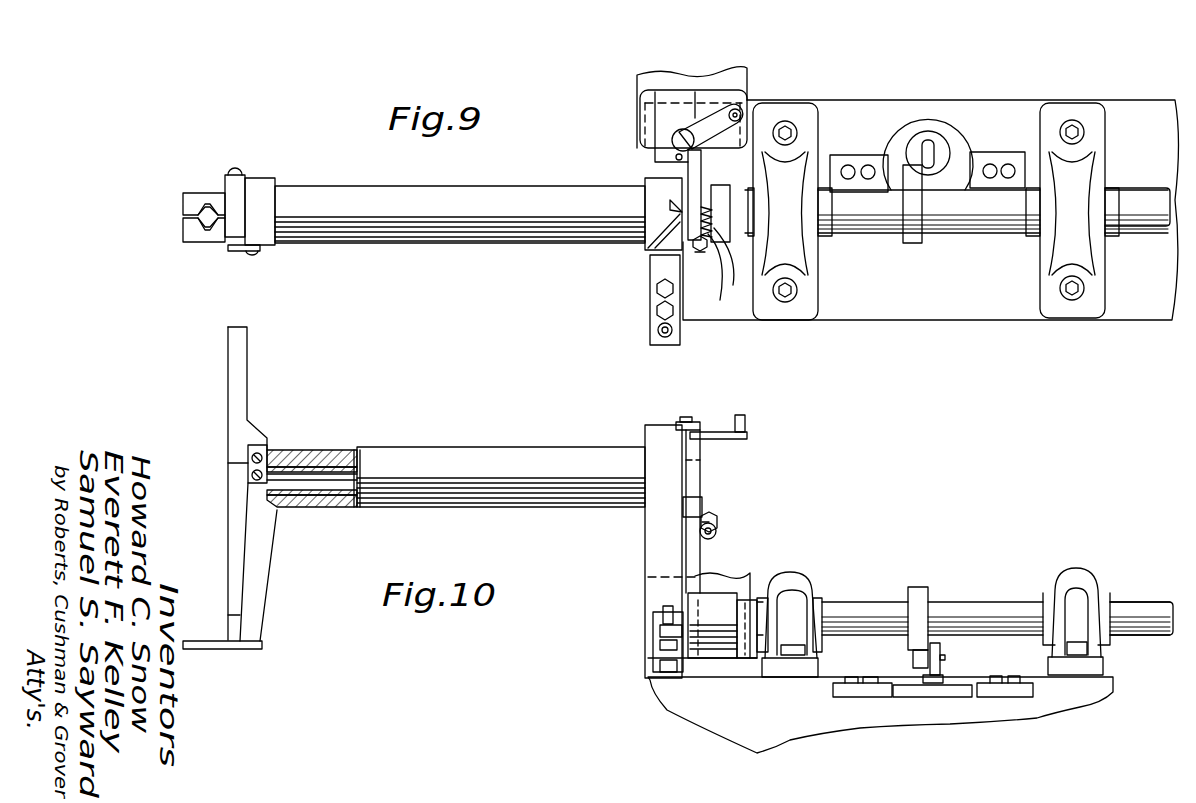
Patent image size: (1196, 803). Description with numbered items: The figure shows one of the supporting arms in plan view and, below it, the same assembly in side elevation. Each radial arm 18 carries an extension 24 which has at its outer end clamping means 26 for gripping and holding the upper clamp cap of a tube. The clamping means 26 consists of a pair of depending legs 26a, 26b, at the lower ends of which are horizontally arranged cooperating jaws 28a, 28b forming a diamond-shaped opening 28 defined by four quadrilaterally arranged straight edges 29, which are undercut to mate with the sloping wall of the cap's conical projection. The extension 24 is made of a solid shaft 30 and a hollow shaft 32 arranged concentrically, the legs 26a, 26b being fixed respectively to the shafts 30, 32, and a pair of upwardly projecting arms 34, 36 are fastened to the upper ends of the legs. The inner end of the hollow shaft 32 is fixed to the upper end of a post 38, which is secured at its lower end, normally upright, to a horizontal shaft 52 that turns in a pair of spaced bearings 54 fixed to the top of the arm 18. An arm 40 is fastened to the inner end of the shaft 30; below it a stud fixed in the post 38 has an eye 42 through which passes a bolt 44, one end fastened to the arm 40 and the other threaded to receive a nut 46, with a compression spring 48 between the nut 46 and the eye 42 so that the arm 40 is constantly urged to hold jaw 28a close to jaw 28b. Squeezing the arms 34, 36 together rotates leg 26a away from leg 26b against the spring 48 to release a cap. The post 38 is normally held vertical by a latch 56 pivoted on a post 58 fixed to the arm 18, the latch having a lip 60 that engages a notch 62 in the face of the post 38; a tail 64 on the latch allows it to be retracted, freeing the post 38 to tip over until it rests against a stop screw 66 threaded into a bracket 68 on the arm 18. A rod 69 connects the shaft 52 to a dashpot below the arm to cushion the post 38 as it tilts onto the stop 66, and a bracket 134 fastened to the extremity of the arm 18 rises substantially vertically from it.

In FIG. 9, the arm 18 is at (917, 312).
In FIG. 10, the arm 18 is at (707, 712).
In FIG. 9, the extension 24 is at (455, 250).
In FIG. 10, the extension 24 is at (458, 510).
In FIG. 9, the clamping means 26 is at (175, 228).
In FIG. 10, the clamping means 26 is at (216, 546).
In FIG. 10, the depending leg 26a is at (229, 590).
In FIG. 10, the depending leg 26b is at (262, 592).
In FIG. 9, the diamond-shaped opening 28 is at (195, 206).
In FIG. 9, the jaw 28a is at (192, 196).
In FIG. 9, the jaw 28b is at (190, 242).
In FIG. 9, the straight edges 29 is at (212, 244).
In FIG. 10, the solid shaft 30 is at (338, 507).
In FIG. 10, the hollow shaft 32 is at (305, 458).
In FIG. 9, the upwardly projecting arm 34 is at (235, 172).
In FIG. 10, the upwardly projecting arm 34 is at (236, 440).
In FIG. 9, the upwardly projecting arm 36 is at (238, 252).
In FIG. 10, the upwardly projecting arm 36 is at (238, 382).
In FIG. 9, the post 38 is at (663, 213).
In FIG. 10, the post 38 is at (650, 515).
In FIG. 10, the arm 40 is at (703, 504).
In FIG. 9, the eye 42 is at (728, 290).
In FIG. 10, the eye 42 is at (716, 520).
In FIG. 9, the bolt 44 is at (704, 197).
In FIG. 9, the nut 46 is at (697, 250).
In FIG. 10, the nut 46 is at (717, 532).
In FIG. 9, the compression spring 48 is at (710, 262).
In FIG. 9, the horizontal shaft 52 is at (975, 225).
In FIG. 10, the horizontal shaft 52 is at (947, 607).
In FIG. 9, the bearings 54 is at (806, 302).
In FIG. 10, the bearings 54 is at (805, 590).
In FIG. 9, the latch 56 is at (672, 160).
In FIG. 9, the post 58 is at (660, 118).
In FIG. 9, the lip 60 is at (662, 232).
In FIG. 9, the notch 62 is at (670, 201).
In FIG. 9, the tail 64 is at (712, 122).
In FIG. 10, the tail 64 is at (716, 435).
In FIG. 9, the stop screw 66 is at (660, 330).
In FIG. 10, the stop screw 66 is at (662, 629).
In FIG. 9, the bracket 68 is at (656, 278).
In FIG. 10, the bracket 68 is at (658, 649).
In FIG. 9, the rod 69 is at (940, 152).
In FIG. 10, the rod 69 is at (945, 668).
In FIG. 9, the bracket 134 is at (637, 88).